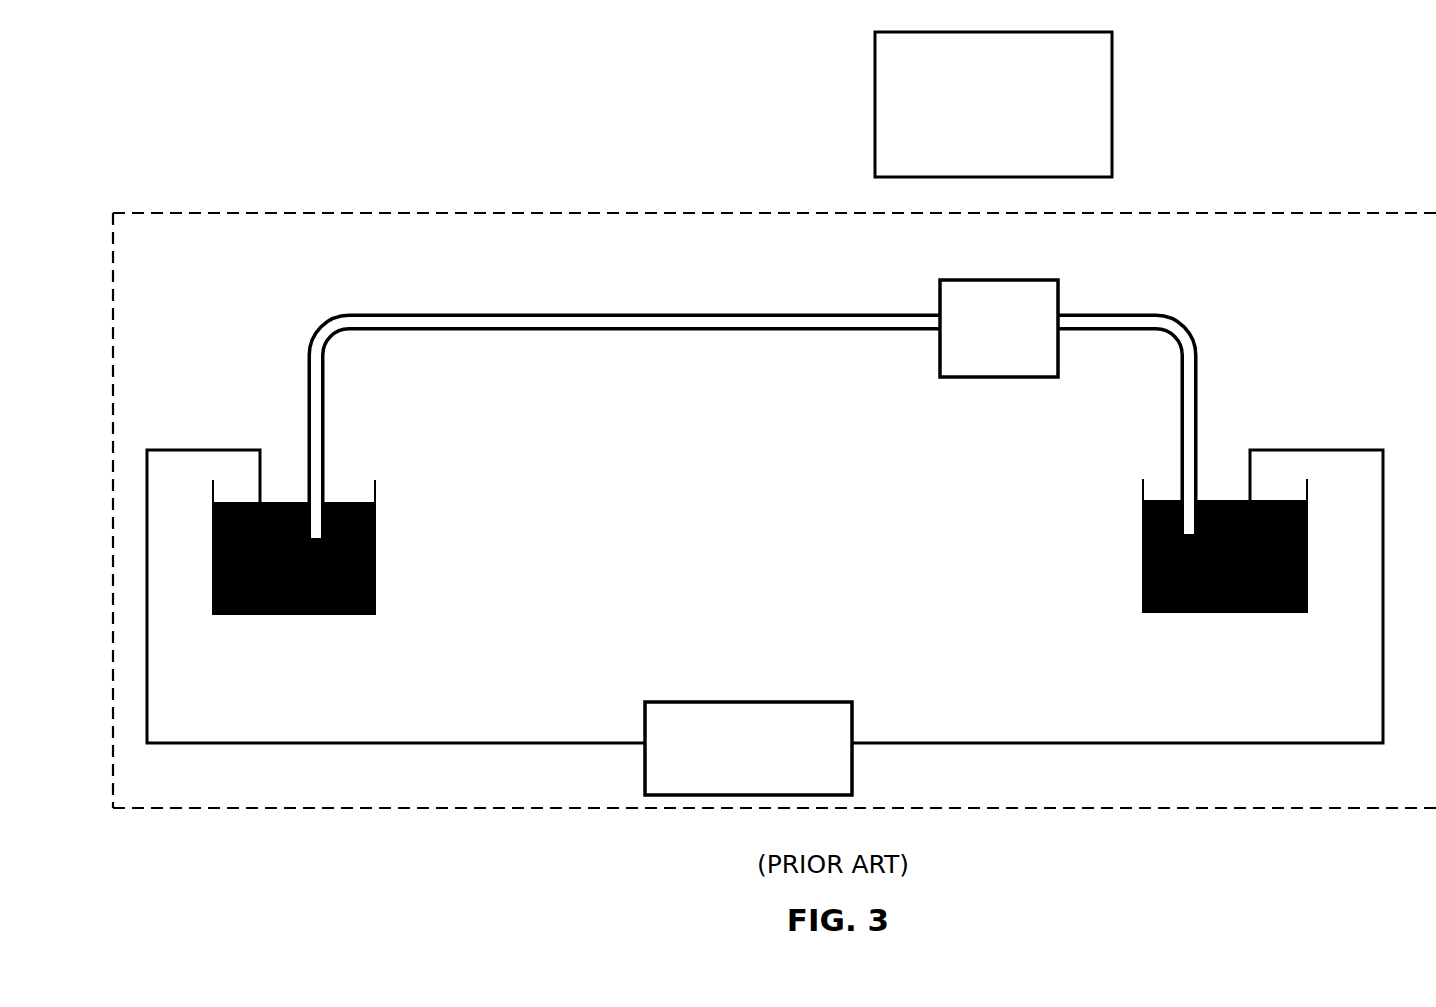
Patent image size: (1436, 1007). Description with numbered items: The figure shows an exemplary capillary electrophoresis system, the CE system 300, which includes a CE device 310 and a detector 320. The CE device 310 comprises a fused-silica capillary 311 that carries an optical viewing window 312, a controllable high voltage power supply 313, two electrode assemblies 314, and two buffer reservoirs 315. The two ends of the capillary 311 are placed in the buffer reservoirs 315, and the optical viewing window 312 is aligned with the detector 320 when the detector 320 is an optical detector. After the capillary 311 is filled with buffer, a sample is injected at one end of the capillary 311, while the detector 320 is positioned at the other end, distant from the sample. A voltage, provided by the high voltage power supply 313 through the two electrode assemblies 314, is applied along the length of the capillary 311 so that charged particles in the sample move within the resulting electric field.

The CE system 300 is at (597, 884).
The CE device 310 is at (500, 213).
The fused-silica capillary 311 is at (601, 322).
The optical viewing window 312 is at (965, 377).
The controllable high voltage power supply 313 is at (740, 702).
The electrode assemblies 314 is at (246, 450).
The buffer reservoirs 315 is at (267, 615).
The detector 320 is at (1112, 138).